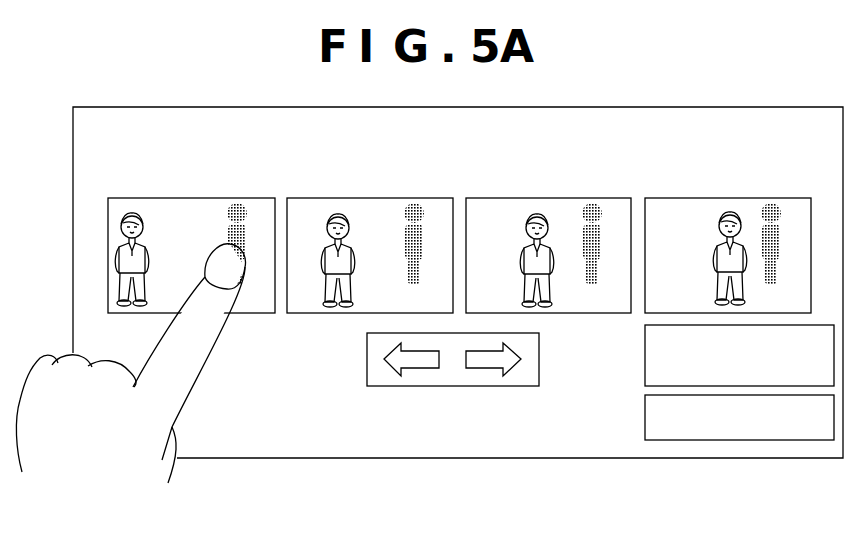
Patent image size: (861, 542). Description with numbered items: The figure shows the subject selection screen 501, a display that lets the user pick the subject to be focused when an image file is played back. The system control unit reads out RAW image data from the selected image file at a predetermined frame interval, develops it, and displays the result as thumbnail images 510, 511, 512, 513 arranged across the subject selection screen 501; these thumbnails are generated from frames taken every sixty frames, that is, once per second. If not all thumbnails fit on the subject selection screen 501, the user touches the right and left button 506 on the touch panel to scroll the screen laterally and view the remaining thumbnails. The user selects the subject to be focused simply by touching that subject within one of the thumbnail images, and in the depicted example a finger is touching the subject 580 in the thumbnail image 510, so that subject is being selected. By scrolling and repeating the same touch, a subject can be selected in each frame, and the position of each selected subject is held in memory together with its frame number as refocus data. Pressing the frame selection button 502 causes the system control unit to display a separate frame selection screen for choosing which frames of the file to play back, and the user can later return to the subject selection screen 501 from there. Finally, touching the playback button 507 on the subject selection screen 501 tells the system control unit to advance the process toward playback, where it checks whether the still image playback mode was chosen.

The subject selection screen 501 is at (657, 107).
The thumbnail image 510 is at (130, 197).
The thumbnail image 511 is at (397, 197).
The thumbnail image 512 is at (577, 197).
The thumbnail image 513 is at (757, 197).
The subject 580 is at (239, 207).
The right and left button 506 is at (367, 348).
The frame selection button 502 is at (645, 352).
The playback button 507 is at (645, 409).